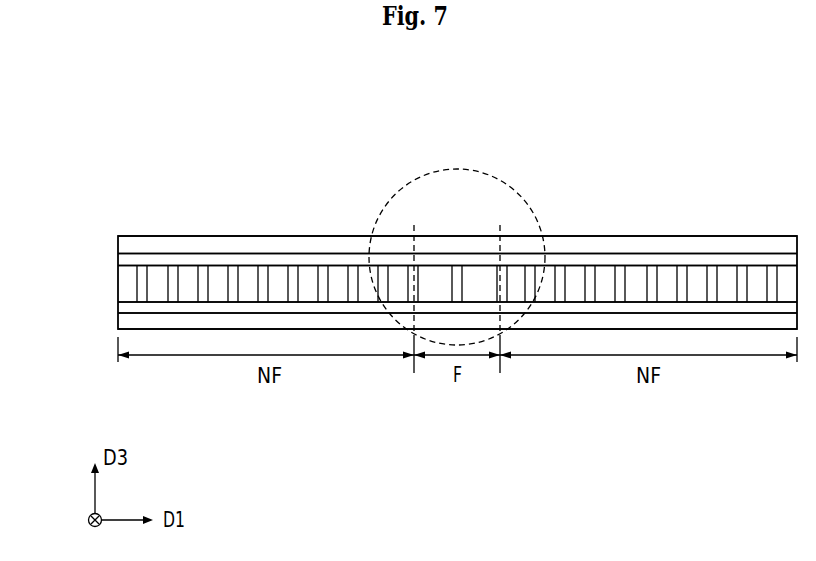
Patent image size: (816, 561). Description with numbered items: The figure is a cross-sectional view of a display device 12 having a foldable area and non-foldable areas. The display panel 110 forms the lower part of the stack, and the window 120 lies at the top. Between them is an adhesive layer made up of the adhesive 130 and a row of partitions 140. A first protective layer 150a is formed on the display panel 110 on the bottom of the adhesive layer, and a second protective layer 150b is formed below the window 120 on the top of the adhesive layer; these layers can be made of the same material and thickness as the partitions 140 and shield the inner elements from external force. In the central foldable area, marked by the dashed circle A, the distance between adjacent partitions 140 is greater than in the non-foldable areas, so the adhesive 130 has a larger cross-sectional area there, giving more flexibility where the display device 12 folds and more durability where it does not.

The display device 12 is at (414, 100).
The display panel 110 is at (120, 322).
The window 120 is at (335, 236).
The adhesive 130 is at (278, 278).
The partitions 140 is at (202, 278).
The first protective layer 150a is at (120, 260).
The second protective layer 150b is at (120, 307).
The enlarged region A is at (488, 172).